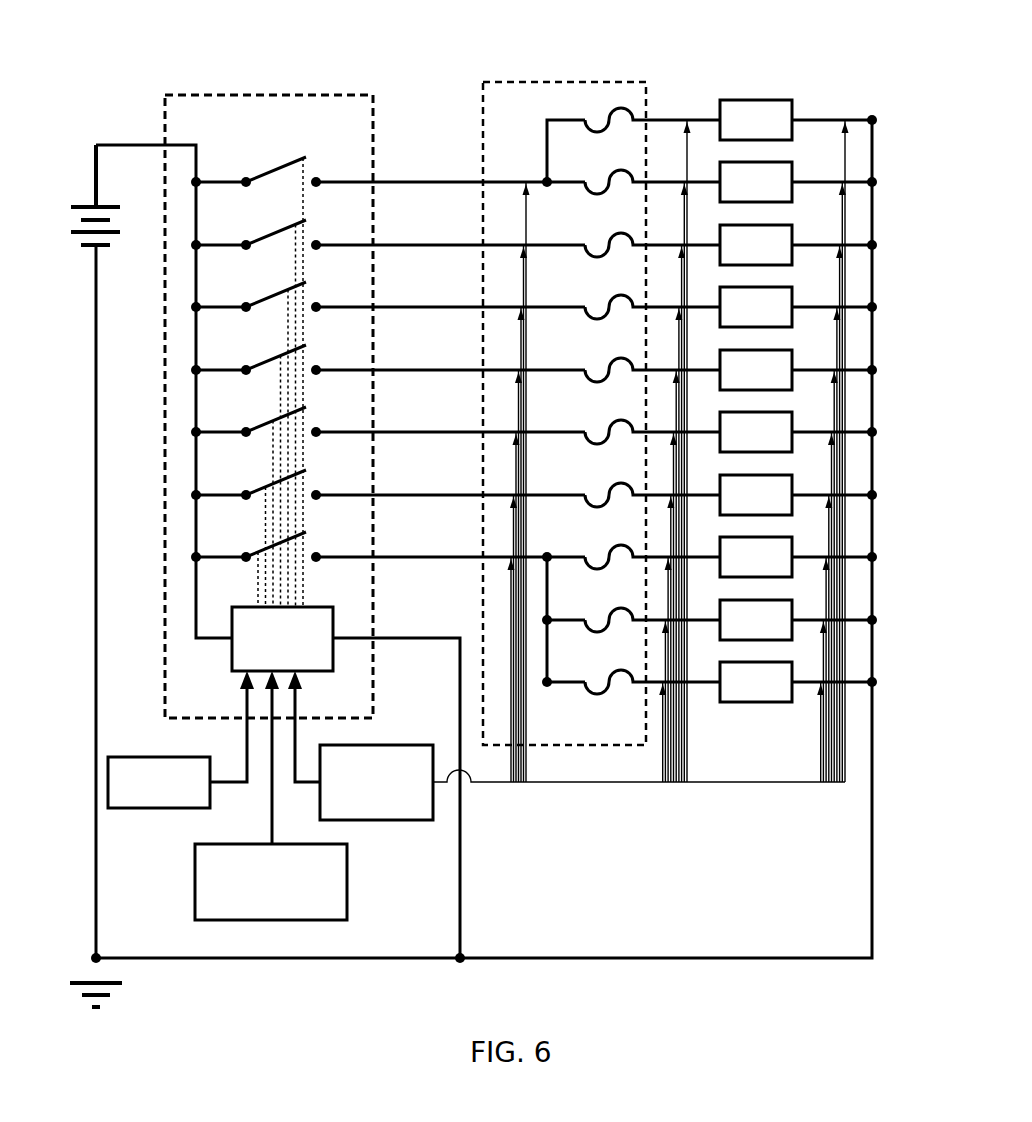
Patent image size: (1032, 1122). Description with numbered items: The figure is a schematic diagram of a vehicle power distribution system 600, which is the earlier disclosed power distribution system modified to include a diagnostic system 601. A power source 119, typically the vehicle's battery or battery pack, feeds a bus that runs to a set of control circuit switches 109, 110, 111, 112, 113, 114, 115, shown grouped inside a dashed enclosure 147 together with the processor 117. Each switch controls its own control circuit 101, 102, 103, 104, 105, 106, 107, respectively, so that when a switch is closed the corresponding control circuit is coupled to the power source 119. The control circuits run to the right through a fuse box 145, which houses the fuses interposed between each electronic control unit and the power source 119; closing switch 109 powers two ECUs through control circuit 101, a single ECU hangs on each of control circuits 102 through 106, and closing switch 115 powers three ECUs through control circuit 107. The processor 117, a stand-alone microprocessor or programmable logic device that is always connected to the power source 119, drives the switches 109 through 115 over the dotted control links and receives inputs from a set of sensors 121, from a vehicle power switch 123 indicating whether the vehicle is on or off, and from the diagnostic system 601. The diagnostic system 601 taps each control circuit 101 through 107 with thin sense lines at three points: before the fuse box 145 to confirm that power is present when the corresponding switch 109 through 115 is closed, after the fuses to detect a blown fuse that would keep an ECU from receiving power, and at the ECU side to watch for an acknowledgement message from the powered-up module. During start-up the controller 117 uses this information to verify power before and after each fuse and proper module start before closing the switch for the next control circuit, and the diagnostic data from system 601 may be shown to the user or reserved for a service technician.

The vehicle power distribution system 600 is at (210, 55).
The power source 119 is at (71, 202).
The switch module 147 is at (283, 90).
The fuse box 145 is at (547, 78).
The control circuit switch 109 is at (292, 162).
The control circuit switch 110 is at (287, 227).
The control circuit switch 111 is at (280, 292).
The control circuit switch 112 is at (273, 357).
The control circuit switch 113 is at (266, 422).
The control circuit switch 114 is at (261, 486).
The control circuit switch 115 is at (258, 550).
The control circuit 101 is at (397, 176).
The control circuit 102 is at (397, 239).
The control circuit 103 is at (397, 301).
The control circuit 104 is at (397, 364).
The control circuit 105 is at (397, 426).
The control circuit 106 is at (397, 489).
The control circuit 107 is at (397, 551).
The processor 117 is at (308, 675).
The sensors 121 is at (157, 808).
The power switch 123 is at (290, 920).
The diagnostic system 601 is at (366, 820).